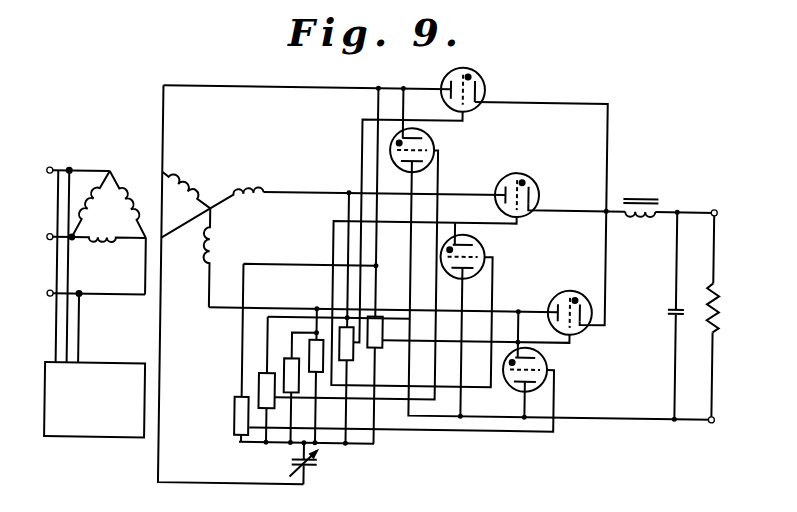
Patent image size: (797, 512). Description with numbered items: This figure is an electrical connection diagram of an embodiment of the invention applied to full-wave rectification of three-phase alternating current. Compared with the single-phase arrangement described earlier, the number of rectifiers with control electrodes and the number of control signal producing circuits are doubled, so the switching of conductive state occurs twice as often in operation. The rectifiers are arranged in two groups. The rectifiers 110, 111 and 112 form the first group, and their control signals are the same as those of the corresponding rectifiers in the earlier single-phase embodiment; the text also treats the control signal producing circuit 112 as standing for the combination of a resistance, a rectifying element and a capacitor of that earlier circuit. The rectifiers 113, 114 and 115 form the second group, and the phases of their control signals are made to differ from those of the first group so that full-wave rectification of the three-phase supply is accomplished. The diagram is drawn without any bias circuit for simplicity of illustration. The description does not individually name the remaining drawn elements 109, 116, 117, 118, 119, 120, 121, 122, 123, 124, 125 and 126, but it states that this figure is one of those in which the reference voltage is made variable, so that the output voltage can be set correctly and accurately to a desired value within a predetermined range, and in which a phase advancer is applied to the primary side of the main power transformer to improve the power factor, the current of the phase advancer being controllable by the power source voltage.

The three-phase star-connected reactor 109 is at (170, 193).
The rectifier with control electrode 110 is at (475, 78).
The rectifier with control electrode 111 is at (518, 173).
The rectifier with control electrode 112 is at (567, 293).
The rectifier with control electrode 113 is at (430, 147).
The rectifier with control electrode 114 is at (483, 247).
The rectifier with control electrode 115 is at (549, 366).
The output transformer 116 is at (640, 193).
The load resistor 117 is at (716, 313).
The capacitor 118 is at (668, 306).
The resistor 119 is at (384, 344).
The resistor 120 is at (351, 363).
The resistor 121 is at (315, 312).
The resistor 122 is at (287, 358).
The resistor 123 is at (260, 385).
The resistor 124 is at (236, 420).
The variable capacitor 125 is at (320, 463).
The phase advancer 126 is at (99, 441).